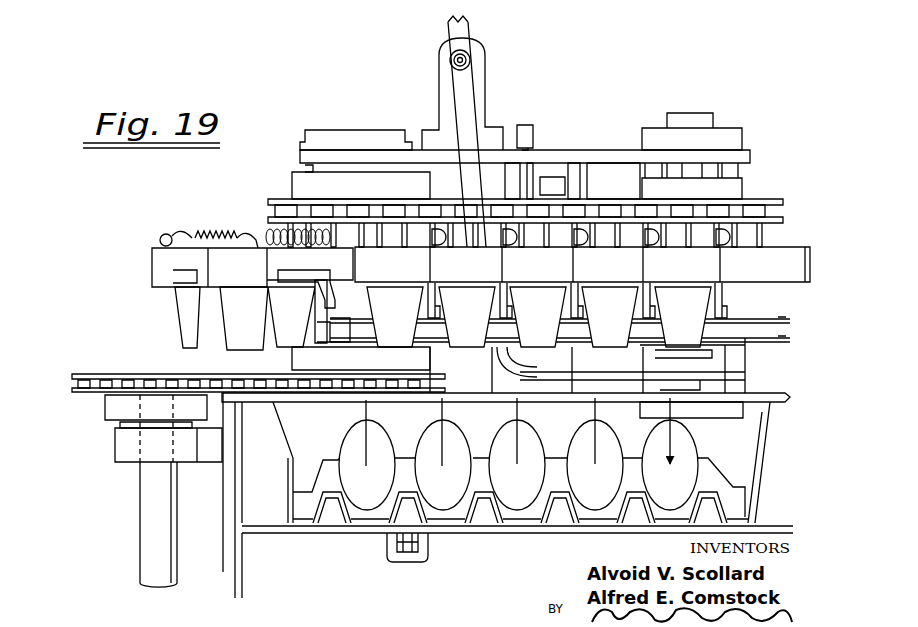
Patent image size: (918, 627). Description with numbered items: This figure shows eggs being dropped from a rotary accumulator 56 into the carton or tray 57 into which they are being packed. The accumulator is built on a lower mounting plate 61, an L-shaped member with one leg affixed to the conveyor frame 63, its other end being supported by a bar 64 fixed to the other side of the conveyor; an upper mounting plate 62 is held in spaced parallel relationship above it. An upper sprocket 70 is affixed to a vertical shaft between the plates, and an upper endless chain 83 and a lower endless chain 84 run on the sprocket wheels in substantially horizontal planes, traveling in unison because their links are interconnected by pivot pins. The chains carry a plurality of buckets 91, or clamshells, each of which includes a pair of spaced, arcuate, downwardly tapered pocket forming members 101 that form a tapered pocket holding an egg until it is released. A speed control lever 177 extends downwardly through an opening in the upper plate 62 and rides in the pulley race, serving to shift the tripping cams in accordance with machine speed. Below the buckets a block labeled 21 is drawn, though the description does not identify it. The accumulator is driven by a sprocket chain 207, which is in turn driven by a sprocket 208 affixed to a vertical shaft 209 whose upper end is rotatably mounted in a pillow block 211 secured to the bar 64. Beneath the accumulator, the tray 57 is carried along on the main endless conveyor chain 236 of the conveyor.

The speed control lever 177 is at (470, 108).
The upper mounting plate 62 is at (302, 152).
The rotary accumulator 56 is at (774, 182).
The upper endless chain 83 is at (266, 200).
The upper sprocket 70 is at (369, 193).
The bucket 91 is at (230, 252).
The pocket forming member 101 is at (670, 464).
The lower endless chain 84 is at (271, 348).
The support block 21 is at (367, 366).
The sprocket chain 207 is at (94, 377).
The sprocket 208 is at (108, 406).
The pillow block 211 is at (118, 447).
The vertical shaft 209 is at (153, 522).
The bar 64 is at (234, 494).
The lower mounting plate 61 is at (346, 402).
The carton or tray 57 is at (732, 466).
The conveyor frame 63 is at (243, 579).
The main endless conveyor chain 236 is at (403, 522).